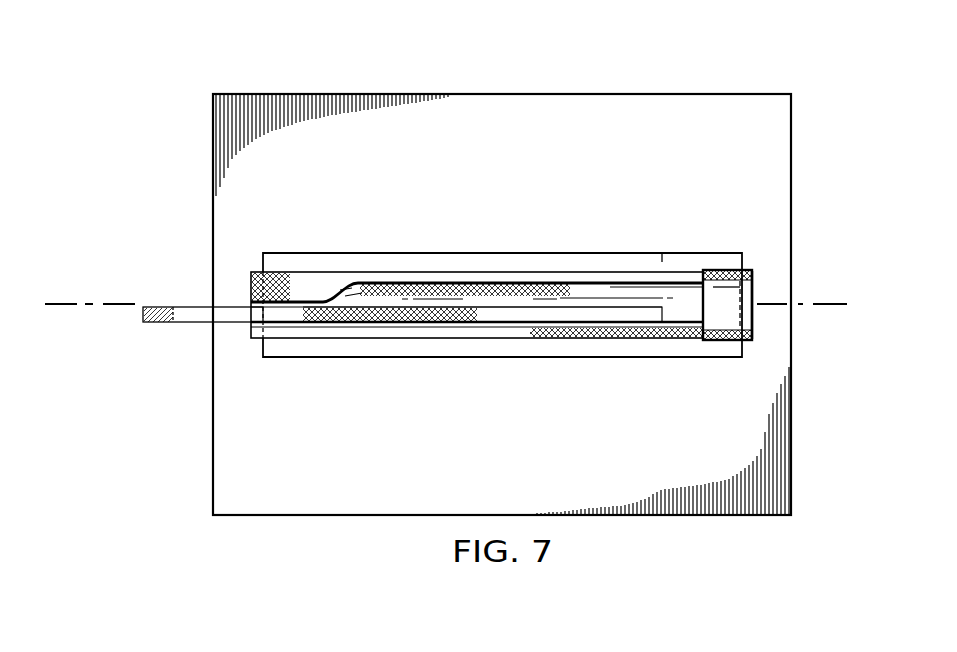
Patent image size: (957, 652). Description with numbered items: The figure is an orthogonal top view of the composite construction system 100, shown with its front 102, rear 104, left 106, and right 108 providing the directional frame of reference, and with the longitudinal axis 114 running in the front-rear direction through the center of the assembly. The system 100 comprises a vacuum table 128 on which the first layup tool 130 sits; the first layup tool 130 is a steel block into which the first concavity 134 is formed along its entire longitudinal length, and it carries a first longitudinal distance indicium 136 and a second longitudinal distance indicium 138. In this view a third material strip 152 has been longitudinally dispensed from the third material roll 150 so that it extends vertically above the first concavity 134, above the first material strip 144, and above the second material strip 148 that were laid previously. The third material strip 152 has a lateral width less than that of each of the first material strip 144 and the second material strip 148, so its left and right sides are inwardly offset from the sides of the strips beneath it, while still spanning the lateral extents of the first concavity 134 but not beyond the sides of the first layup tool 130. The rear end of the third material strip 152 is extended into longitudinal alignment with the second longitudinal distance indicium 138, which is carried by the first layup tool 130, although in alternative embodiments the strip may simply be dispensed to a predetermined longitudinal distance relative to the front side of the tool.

The composite construction system 100 is at (115, 143).
The front 102 is at (175, 224).
The rear 104 is at (828, 264).
The left 106 is at (540, 60).
The right 108 is at (608, 548).
The longitudinal axis 114 is at (112, 302).
The vacuum table 128 is at (630, 94).
The first layup tool 130 is at (513, 252).
The first concavity 134 is at (307, 302).
The first longitudinal distance indicium 136 is at (703, 262).
The second longitudinal distance indicium 138 is at (664, 238).
The first material strip 144 is at (752, 318).
The second material strip 148 is at (704, 312).
The third material roll 150 is at (160, 323).
The third material strip 152 is at (573, 305).